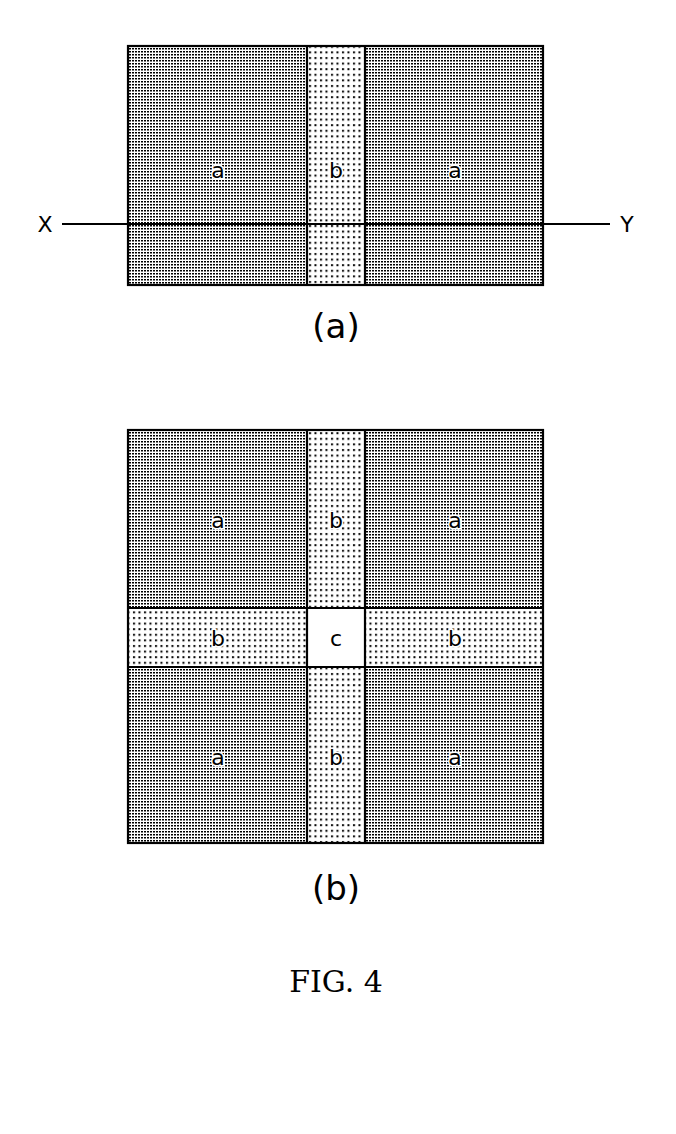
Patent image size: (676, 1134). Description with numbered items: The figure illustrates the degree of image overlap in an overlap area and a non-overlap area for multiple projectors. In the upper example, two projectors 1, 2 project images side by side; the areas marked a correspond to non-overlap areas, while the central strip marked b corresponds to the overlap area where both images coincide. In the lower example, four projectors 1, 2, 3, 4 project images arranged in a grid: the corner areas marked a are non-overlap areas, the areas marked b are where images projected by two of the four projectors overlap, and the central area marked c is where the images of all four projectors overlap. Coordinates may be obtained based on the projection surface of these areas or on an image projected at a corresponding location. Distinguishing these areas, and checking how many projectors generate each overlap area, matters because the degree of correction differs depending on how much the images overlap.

The projector 1 is at (217, 312).
The projector 2 is at (454, 312).
The projector 3 is at (217, 771).
The projector 4 is at (454, 771).